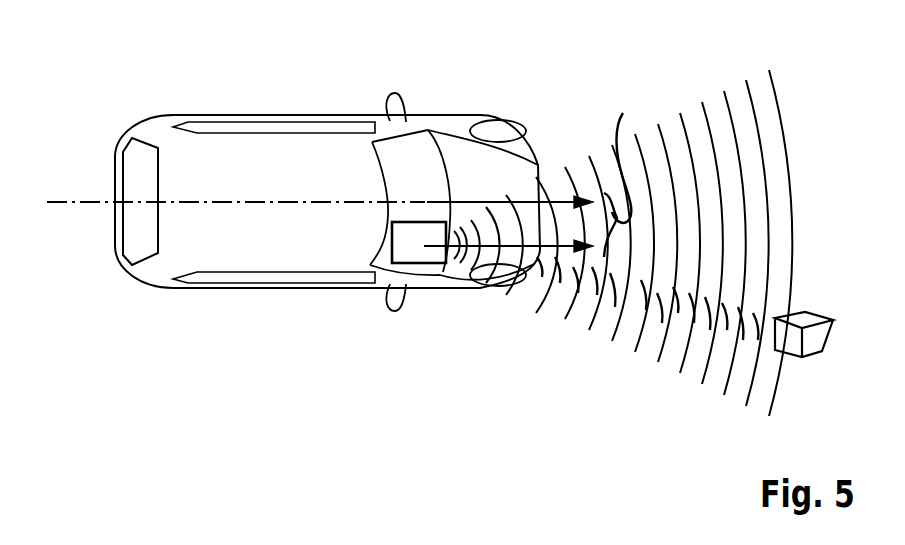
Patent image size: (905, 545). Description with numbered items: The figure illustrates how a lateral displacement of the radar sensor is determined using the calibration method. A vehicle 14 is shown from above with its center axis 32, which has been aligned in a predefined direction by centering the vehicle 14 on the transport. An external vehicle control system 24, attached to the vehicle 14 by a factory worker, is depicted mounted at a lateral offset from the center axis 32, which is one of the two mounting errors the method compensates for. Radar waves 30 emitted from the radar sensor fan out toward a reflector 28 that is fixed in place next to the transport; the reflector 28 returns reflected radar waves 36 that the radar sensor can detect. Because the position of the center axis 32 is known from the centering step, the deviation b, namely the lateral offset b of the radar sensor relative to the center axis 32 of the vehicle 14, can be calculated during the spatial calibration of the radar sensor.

The vehicle 14 is at (115, 163).
The external vehicle control system 24 is at (412, 246).
The reflector 28 is at (812, 338).
The radar waves 30 is at (777, 105).
The center axis 32 is at (52, 205).
The reflected radar waves 36 is at (647, 333).
The lateral offset b is at (617, 175).